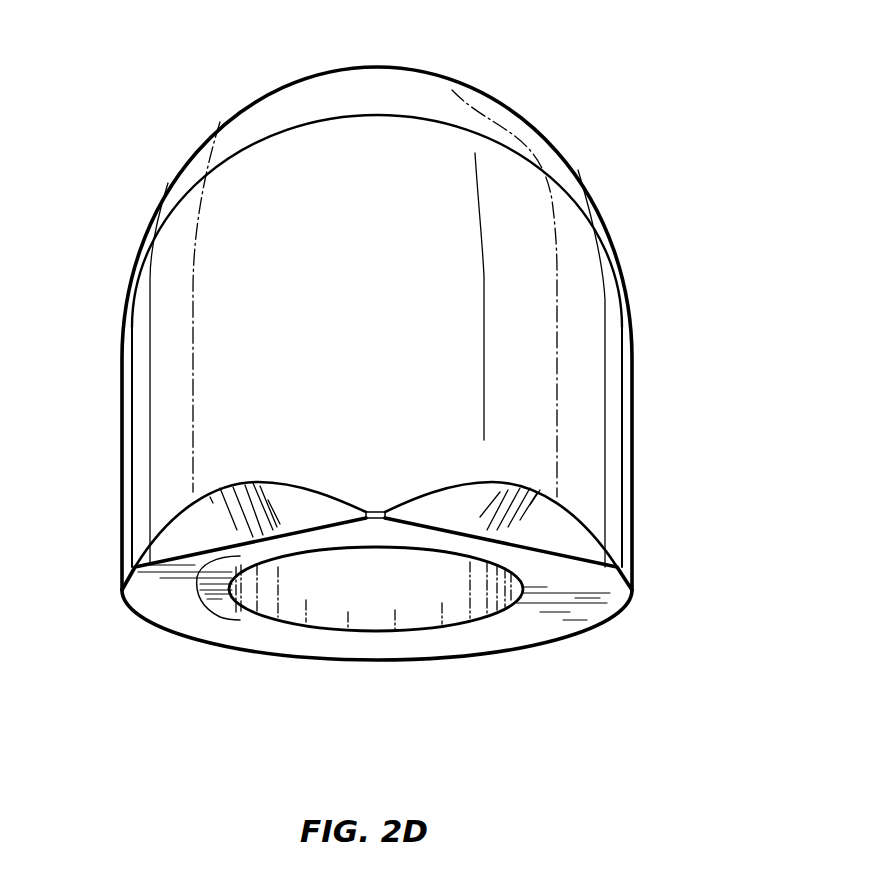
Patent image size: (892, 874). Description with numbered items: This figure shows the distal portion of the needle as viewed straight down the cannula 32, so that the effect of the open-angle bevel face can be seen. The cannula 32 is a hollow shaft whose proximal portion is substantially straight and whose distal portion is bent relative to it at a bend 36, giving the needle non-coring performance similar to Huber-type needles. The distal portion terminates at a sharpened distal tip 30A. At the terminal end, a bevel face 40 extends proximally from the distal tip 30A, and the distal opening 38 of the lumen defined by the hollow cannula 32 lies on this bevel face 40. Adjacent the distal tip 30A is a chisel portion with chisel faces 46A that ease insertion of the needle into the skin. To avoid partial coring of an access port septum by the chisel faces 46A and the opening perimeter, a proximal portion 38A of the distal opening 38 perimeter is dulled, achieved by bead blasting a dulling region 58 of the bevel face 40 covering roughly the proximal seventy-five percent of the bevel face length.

The sharpened distal tip 30A is at (370, 512).
The cannula 32 is at (225, 124).
The bend 36 is at (520, 123).
The distal opening 38 is at (350, 552).
The proximal portion of the distal opening perimeter 38A is at (513, 628).
The bevel face 40 is at (590, 602).
The chisel faces 46A is at (197, 520).
The dulling region 58 is at (160, 597).